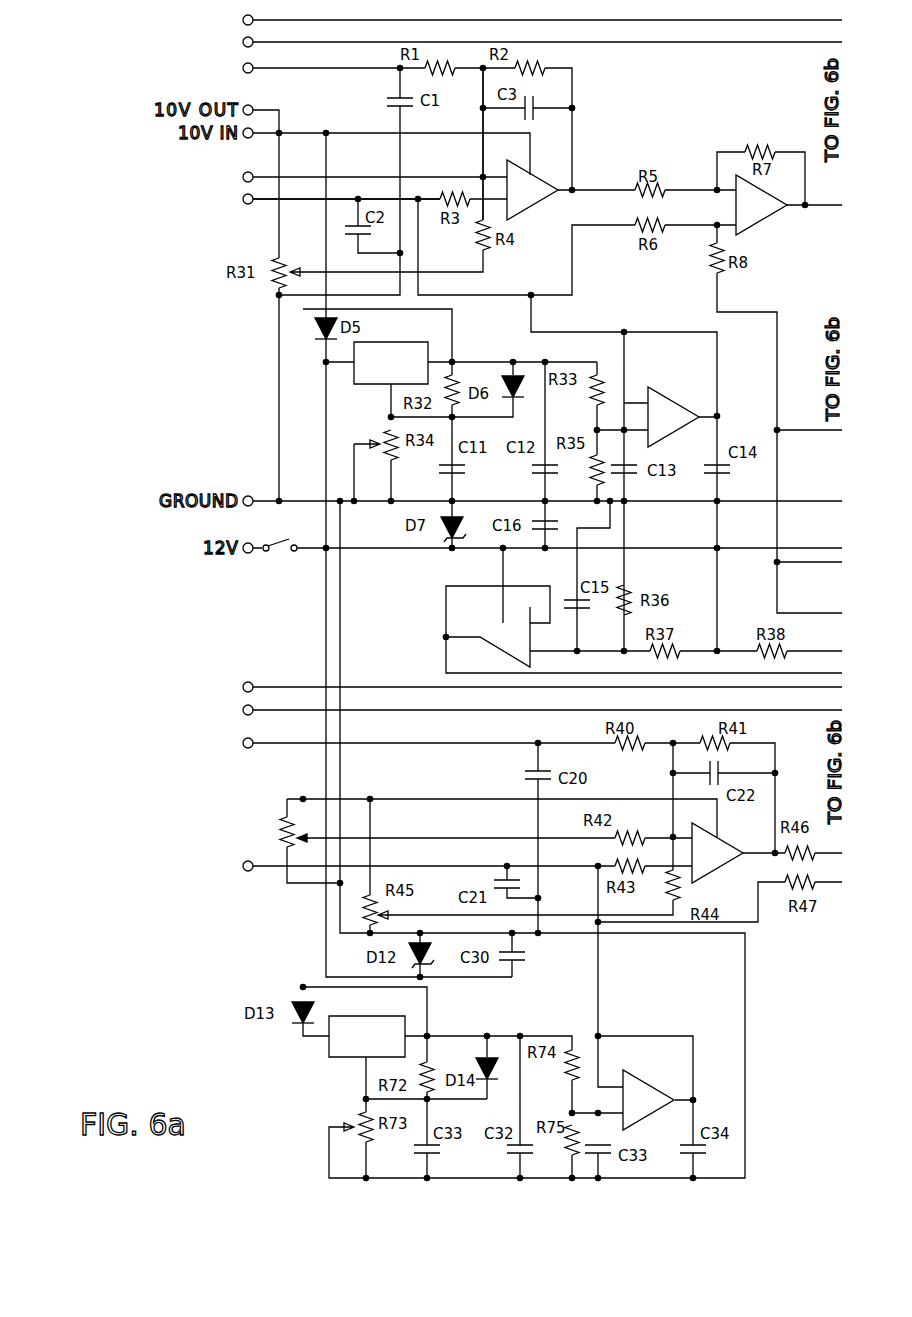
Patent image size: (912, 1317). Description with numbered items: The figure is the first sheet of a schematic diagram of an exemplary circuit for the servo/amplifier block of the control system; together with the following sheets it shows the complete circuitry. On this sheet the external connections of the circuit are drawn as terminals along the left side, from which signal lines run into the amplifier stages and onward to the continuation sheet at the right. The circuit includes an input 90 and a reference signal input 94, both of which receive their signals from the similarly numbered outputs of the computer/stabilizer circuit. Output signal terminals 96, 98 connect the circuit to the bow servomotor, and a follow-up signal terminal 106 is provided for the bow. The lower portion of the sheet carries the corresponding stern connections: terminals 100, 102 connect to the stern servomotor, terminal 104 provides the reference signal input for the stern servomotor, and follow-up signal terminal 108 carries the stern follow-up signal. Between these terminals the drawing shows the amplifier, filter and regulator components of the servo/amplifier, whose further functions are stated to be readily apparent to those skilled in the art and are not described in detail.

The output signal terminal 96 is at (253, 17).
The output signal terminal 98 is at (252, 46).
The follow-up signal terminal 106 is at (252, 72).
The input 90 is at (253, 174).
The reference signal input 94 is at (247, 204).
The terminal 100 is at (247, 681).
The terminal 102 is at (251, 714).
The follow-up signal terminal 108 is at (251, 748).
The terminal 104 is at (248, 860).